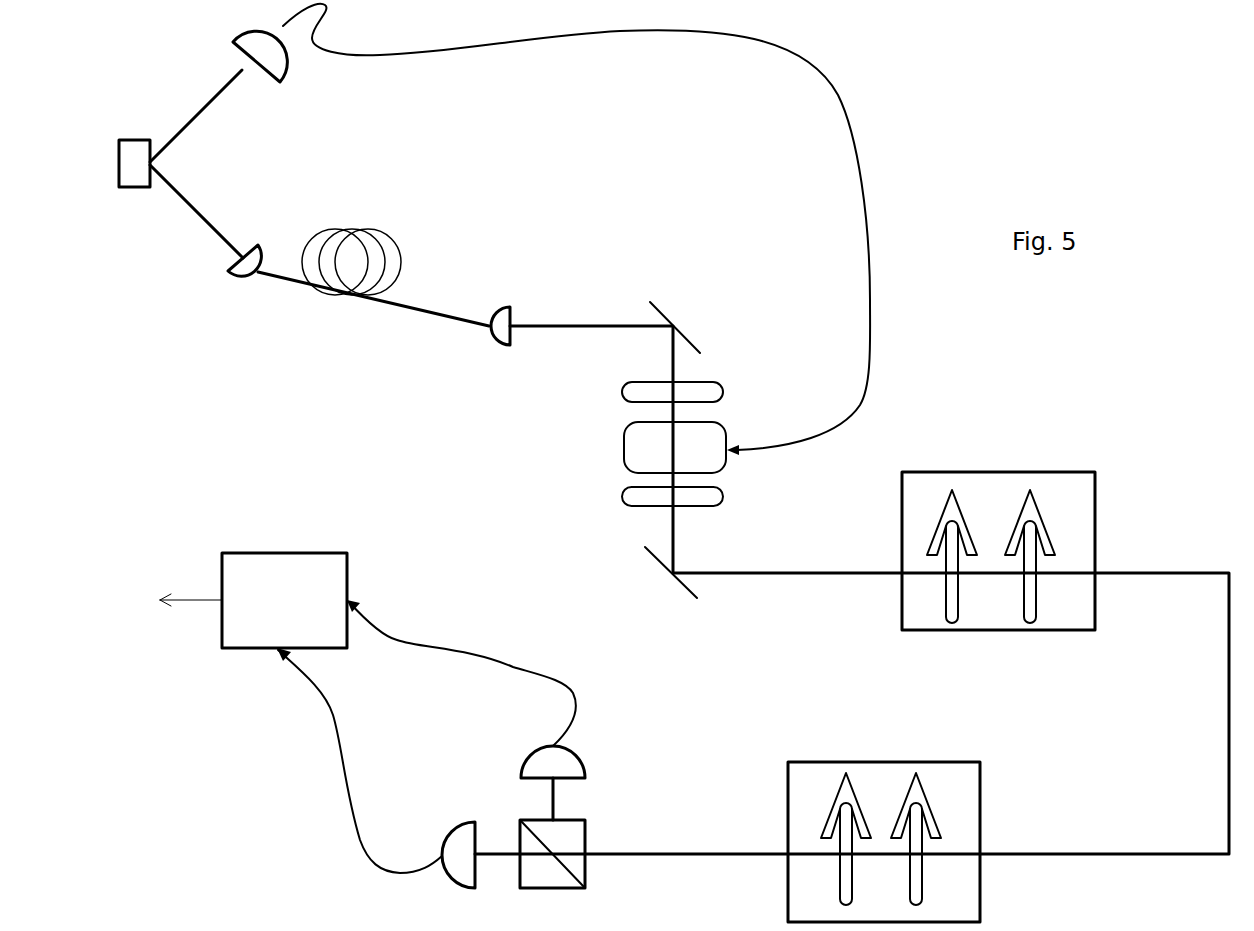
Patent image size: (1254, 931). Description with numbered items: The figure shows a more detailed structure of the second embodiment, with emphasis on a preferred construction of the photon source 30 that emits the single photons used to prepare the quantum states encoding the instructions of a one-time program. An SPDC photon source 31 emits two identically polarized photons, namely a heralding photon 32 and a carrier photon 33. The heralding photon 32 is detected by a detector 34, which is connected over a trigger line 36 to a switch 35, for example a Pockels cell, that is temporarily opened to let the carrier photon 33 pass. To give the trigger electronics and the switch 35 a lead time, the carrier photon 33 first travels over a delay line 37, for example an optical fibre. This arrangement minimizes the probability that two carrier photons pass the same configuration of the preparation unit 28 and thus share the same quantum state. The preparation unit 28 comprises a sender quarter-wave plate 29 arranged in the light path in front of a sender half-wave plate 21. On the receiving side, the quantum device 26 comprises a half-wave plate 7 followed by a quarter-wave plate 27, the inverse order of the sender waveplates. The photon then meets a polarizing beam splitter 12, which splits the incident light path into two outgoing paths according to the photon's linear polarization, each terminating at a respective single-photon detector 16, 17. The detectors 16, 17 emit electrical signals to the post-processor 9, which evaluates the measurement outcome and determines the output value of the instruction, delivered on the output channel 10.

The half-wave plate 7 is at (923, 878).
The post-processor 9 is at (284, 600).
The output channel 10 is at (203, 600).
The polarizing beam splitter 12 is at (527, 895).
The detector 16 is at (582, 765).
The detector 17 is at (467, 822).
The sender half-wave plate 21 is at (1033, 600).
The quantum device 26 is at (882, 842).
The quarter-wave plate 27 is at (840, 877).
The preparation unit 28 is at (1037, 585).
The sender quarter-wave plate 29 is at (958, 623).
The photon source 30 is at (108, 301).
The SPDC photon source 31 is at (130, 140).
The heralding photon 32 is at (180, 132).
The carrier photon 33 is at (203, 227).
The detector 34 is at (237, 35).
The switch 35 is at (622, 443).
The trigger line 36 is at (848, 127).
The delay line 37 is at (343, 230).